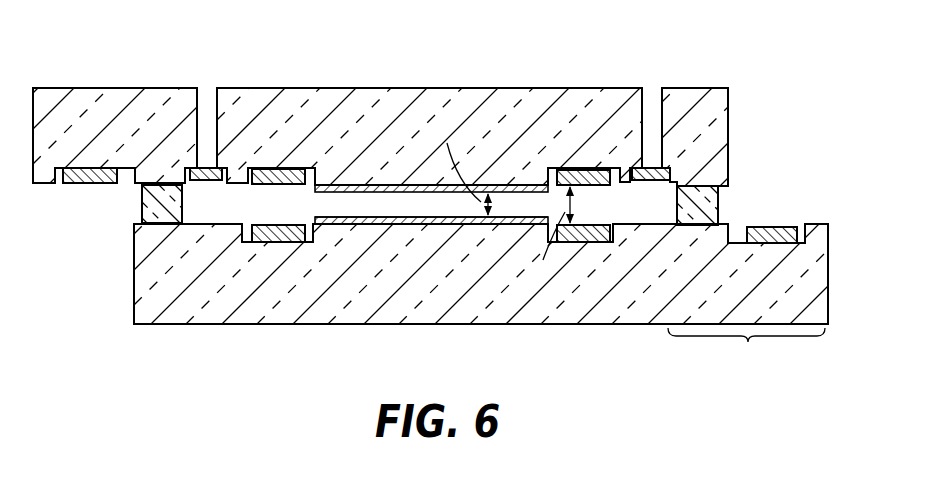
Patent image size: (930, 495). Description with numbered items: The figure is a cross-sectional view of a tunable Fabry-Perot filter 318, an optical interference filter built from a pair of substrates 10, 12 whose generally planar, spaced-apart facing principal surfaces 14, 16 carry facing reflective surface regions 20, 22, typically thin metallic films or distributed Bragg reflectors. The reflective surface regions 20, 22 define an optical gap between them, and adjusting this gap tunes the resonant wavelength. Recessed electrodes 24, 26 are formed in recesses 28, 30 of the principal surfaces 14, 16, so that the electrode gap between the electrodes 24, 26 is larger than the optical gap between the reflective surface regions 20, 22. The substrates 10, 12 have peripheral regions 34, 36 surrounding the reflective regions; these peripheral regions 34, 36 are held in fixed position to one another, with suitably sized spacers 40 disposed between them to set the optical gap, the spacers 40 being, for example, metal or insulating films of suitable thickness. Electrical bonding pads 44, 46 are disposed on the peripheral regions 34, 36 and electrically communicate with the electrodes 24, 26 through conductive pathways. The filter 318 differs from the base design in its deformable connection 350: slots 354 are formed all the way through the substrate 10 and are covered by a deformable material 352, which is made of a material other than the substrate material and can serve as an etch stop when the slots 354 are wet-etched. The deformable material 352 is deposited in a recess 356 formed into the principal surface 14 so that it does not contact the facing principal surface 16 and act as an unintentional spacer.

The Fabry-Perot filter 318 is at (147, 22).
The peripheral region 34 is at (187, 84).
The substrate 10 is at (398, 88).
The substrate 12 is at (283, 313).
The recessed electrode 24 is at (276, 168).
The deformable connection 350 is at (650, 87).
The slots 354 is at (652, 125).
The recess 356 is at (633, 167).
The deformable material 352 is at (650, 182).
The principal surface 14 is at (367, 194).
The reflective surface region 22 is at (360, 227).
The reflective surface region 20 is at (431, 167).
The principal surface 16 is at (374, 215).
The recess 28 is at (308, 190).
The recessed electrode 26 is at (280, 245).
The recess 30 is at (247, 222).
The spacer 40 is at (142, 217).
The electrical bonding pad 44 is at (90, 187).
The electrical bonding pad 46 is at (773, 226).
The peripheral region 36 is at (746, 349).